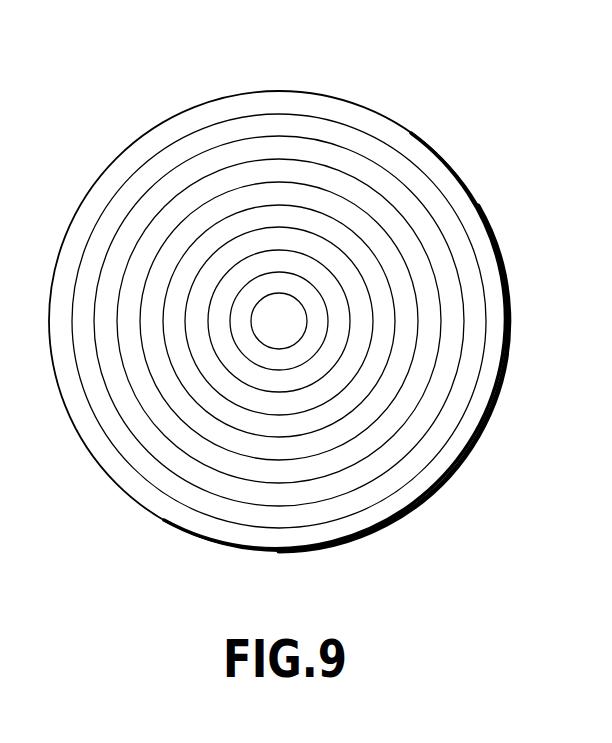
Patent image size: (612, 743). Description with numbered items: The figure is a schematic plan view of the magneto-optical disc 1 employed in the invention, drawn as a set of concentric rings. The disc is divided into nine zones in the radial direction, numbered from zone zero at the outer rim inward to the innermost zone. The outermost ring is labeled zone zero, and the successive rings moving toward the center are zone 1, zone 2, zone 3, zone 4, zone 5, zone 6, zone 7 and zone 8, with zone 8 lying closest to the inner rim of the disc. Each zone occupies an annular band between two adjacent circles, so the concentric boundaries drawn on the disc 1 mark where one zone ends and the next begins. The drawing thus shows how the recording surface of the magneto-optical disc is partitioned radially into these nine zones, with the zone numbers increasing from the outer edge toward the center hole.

The magneto-optical disc 1 is at (465, 93).
The zone 2 is at (279, 321).
The zone 3 is at (279, 321).
The zone 4 is at (279, 321).
The zone 5 is at (279, 321).
The zone 6 is at (279, 321).
The zone 7 is at (279, 321).
The zone 8 is at (279, 321).